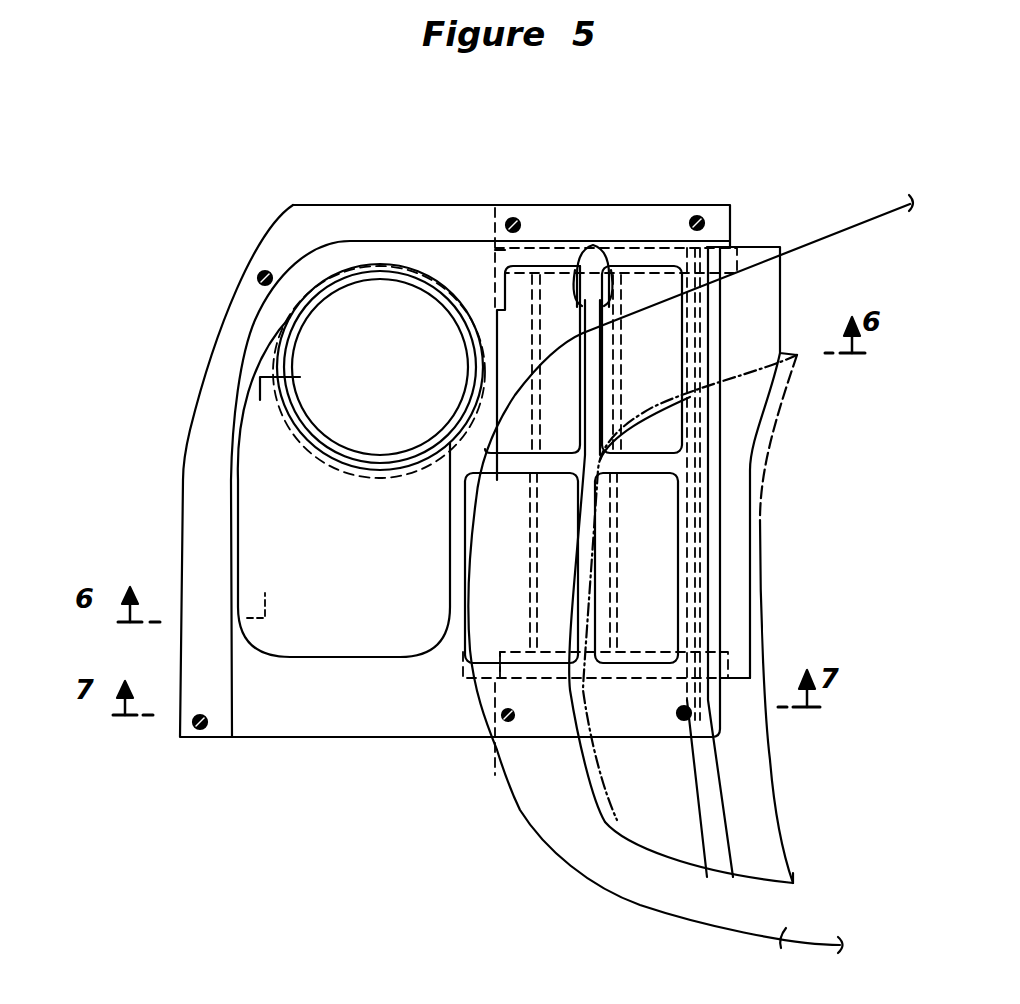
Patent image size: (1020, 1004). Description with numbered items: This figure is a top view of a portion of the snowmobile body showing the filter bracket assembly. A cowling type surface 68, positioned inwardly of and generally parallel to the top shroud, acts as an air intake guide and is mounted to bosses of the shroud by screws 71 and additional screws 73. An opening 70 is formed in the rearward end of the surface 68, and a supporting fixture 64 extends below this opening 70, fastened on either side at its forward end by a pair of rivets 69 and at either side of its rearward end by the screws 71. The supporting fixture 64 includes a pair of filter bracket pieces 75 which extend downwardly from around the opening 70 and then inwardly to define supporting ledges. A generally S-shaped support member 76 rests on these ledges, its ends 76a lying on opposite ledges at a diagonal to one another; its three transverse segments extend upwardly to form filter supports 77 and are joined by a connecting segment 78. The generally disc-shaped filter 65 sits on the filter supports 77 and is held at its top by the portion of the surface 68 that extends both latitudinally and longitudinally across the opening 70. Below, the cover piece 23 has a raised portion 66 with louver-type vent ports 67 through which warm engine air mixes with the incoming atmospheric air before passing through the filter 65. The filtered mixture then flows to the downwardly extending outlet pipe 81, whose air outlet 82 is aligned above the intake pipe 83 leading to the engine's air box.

The cover piece 23 is at (783, 945).
The supporting fixture 64 is at (625, 220).
The filter 65 is at (730, 497).
The raised portion 66 is at (520, 812).
The louver-type vent ports 67 is at (620, 820).
The cowling type surface 68 is at (322, 213).
The rivets 69 is at (506, 224).
The opening 70 is at (592, 245).
The screws 71 is at (697, 216).
The additional screws 73 is at (258, 278).
The filter bracket pieces 75 is at (505, 715).
The support member 76 is at (530, 513).
The ends of the support member 76a is at (705, 260).
The filter supports 77 is at (618, 515).
The connecting segment 78 is at (557, 260).
The outlet pipe 81 is at (250, 555).
The air outlet 82 is at (323, 357).
The intake pipe 83 is at (297, 430).